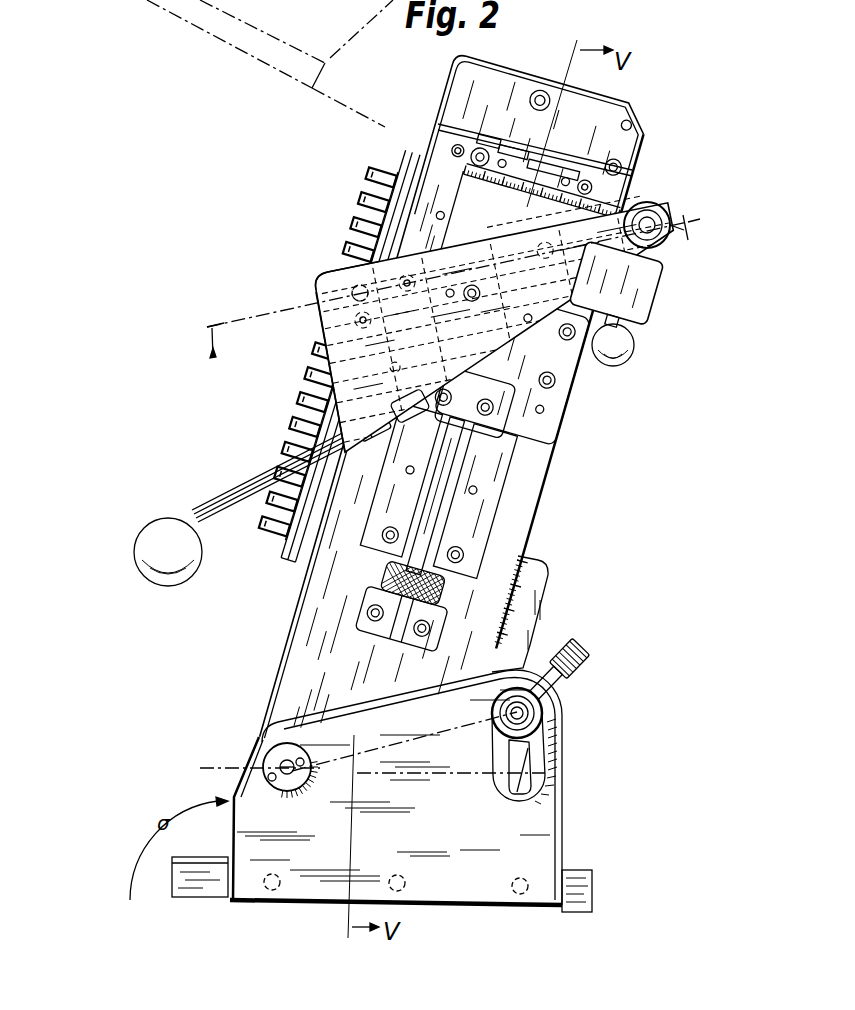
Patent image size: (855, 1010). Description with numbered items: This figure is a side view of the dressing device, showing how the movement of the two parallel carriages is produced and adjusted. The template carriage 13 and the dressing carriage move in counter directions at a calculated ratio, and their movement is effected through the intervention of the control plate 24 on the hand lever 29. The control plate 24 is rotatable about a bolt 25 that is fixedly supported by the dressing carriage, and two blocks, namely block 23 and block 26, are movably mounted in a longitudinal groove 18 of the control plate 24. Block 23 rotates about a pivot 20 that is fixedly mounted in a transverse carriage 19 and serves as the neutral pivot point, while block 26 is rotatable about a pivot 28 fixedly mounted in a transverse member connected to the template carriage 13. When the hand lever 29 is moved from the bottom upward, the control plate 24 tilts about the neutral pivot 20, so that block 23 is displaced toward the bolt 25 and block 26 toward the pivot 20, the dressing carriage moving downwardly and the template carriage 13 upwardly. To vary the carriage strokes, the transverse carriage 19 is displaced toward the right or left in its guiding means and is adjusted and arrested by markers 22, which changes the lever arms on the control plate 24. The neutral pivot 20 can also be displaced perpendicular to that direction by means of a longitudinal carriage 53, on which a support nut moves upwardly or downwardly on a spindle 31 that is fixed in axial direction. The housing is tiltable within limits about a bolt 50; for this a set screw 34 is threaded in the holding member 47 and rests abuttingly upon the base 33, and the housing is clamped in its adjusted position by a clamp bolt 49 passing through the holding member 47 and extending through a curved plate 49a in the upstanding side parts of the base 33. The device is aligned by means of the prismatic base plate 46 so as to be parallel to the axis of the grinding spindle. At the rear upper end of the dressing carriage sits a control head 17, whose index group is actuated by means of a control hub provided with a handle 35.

The template carriage 13 is at (292, 553).
The control head 17 is at (642, 318).
The longitudinal groove 18 is at (450, 298).
The transverse carriage 19 is at (478, 196).
The pivot 20 is at (640, 288).
The markers 22 is at (478, 196).
The block 23 is at (622, 268).
The control plate 24 is at (330, 350).
The bolt 25 is at (660, 243).
The block 26 is at (342, 297).
The pivot 28 is at (357, 287).
The hand lever 29 is at (262, 474).
The spindle 31 is at (430, 515).
The base 33 is at (537, 815).
The set screw 34 is at (578, 653).
The handle 35 is at (623, 360).
The prismatic base plate 46 is at (205, 897).
The holding member 47 is at (542, 581).
The clamp bolt 49 is at (522, 712).
The curved plate 49a is at (533, 770).
The bolt 50 is at (287, 763).
The longitudinal carriage 53 is at (550, 405).